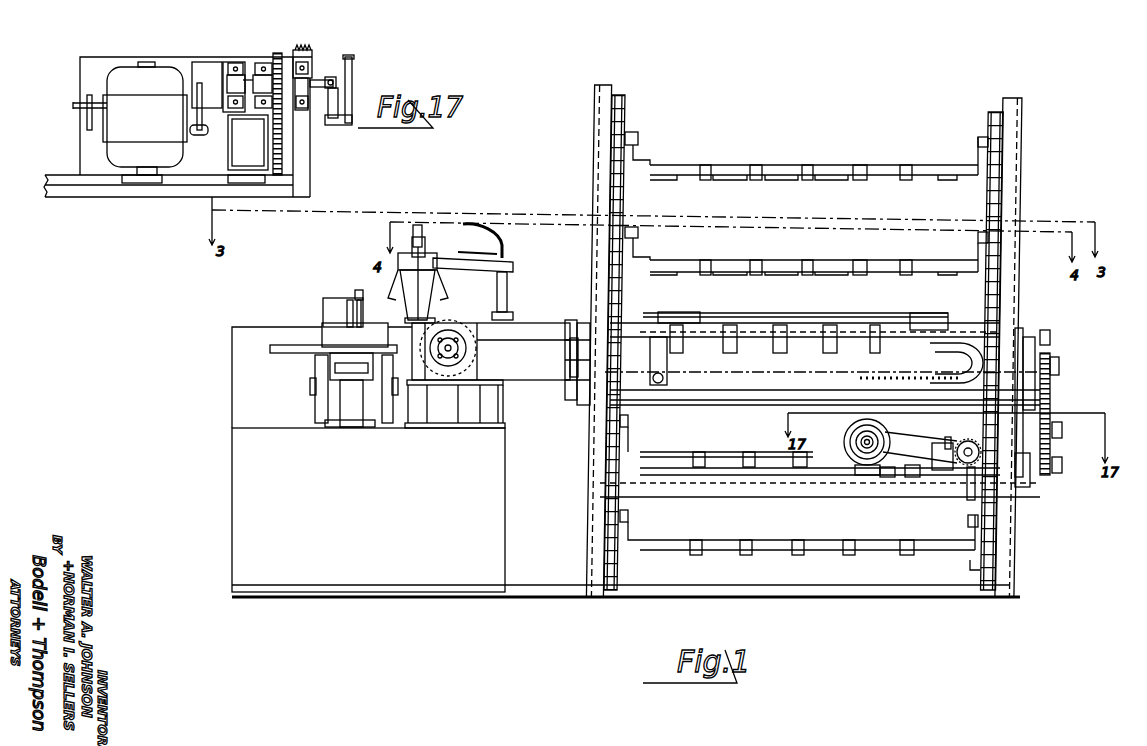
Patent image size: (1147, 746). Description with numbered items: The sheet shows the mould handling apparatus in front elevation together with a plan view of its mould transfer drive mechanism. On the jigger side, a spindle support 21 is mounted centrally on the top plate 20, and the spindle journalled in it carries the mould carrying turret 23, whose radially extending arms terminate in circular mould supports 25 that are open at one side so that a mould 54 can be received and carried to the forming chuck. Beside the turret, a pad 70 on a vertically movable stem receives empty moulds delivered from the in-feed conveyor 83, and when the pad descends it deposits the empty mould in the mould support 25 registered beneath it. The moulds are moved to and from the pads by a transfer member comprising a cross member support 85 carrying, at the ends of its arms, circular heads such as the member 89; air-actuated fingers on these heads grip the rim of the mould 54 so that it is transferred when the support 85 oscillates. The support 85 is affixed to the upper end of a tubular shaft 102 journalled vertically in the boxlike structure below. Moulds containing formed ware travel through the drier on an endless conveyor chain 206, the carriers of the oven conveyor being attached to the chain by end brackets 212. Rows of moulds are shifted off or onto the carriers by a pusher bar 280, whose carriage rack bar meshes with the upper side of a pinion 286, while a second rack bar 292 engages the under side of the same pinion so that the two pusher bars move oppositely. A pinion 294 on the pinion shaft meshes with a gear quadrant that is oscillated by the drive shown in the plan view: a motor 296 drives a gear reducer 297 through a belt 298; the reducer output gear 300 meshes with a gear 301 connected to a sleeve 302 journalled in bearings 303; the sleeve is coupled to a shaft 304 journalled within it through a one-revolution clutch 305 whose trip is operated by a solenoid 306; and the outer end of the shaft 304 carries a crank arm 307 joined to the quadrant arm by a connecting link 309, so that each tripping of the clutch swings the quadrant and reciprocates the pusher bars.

In FIG. 1, the top plate 20 is at (290, 430).
In FIG. 1, the spindle support 21 is at (352, 430).
In FIG. 1, the mould carrying turret 23 is at (320, 392).
In FIG. 1, the circular mould support 25 is at (292, 358).
In FIG. 1, the mould 54 is at (437, 316).
In FIG. 1, the pad 70 is at (405, 321).
In FIG. 1, the in-feed conveyor 83 is at (530, 322).
In FIG. 1, the cross member support 85 is at (512, 266).
In FIG. 1, the circular shaped member 89 is at (425, 250).
In FIG. 1, the tubular shaft 102 is at (507, 300).
In FIG. 1, the endless conveyor chain 206 is at (618, 200).
In FIG. 1, the bracket 212 is at (978, 142).
In FIG. 1, the pusher bar 280 is at (862, 320).
In FIG. 1, the pinion 286 is at (565, 357).
In FIG. 17, the rack bar 292 is at (255, 142).
In FIG. 1, the pinion 294 is at (1059, 365).
In FIG. 17, the motor 296 is at (130, 122).
In FIG. 1, the motor 296 is at (855, 436).
In FIG. 1, the gear reducer 297 is at (970, 500).
In FIG. 17, the belt 298 is at (228, 178).
In FIG. 1, the belt 298 is at (936, 442).
In FIG. 17, the gear 300 is at (282, 166).
In FIG. 1, the gear 300 is at (1045, 414).
In FIG. 17, the gear 301 is at (295, 52).
In FIG. 17, the sleeve 302 is at (232, 62).
In FIG. 17, the bearing 303 is at (262, 62).
In FIG. 17, the shaft 304 is at (313, 64).
In FIG. 1, the shaft 304 is at (1030, 486).
In FIG. 17, the bracket 305 is at (211, 62).
In FIG. 1, the bracket 305 is at (947, 436).
In FIG. 17, the solenoid 306 is at (200, 136).
In FIG. 17, the crank arm 307 is at (327, 120).
In FIG. 17, the connecting link 309 is at (353, 80).